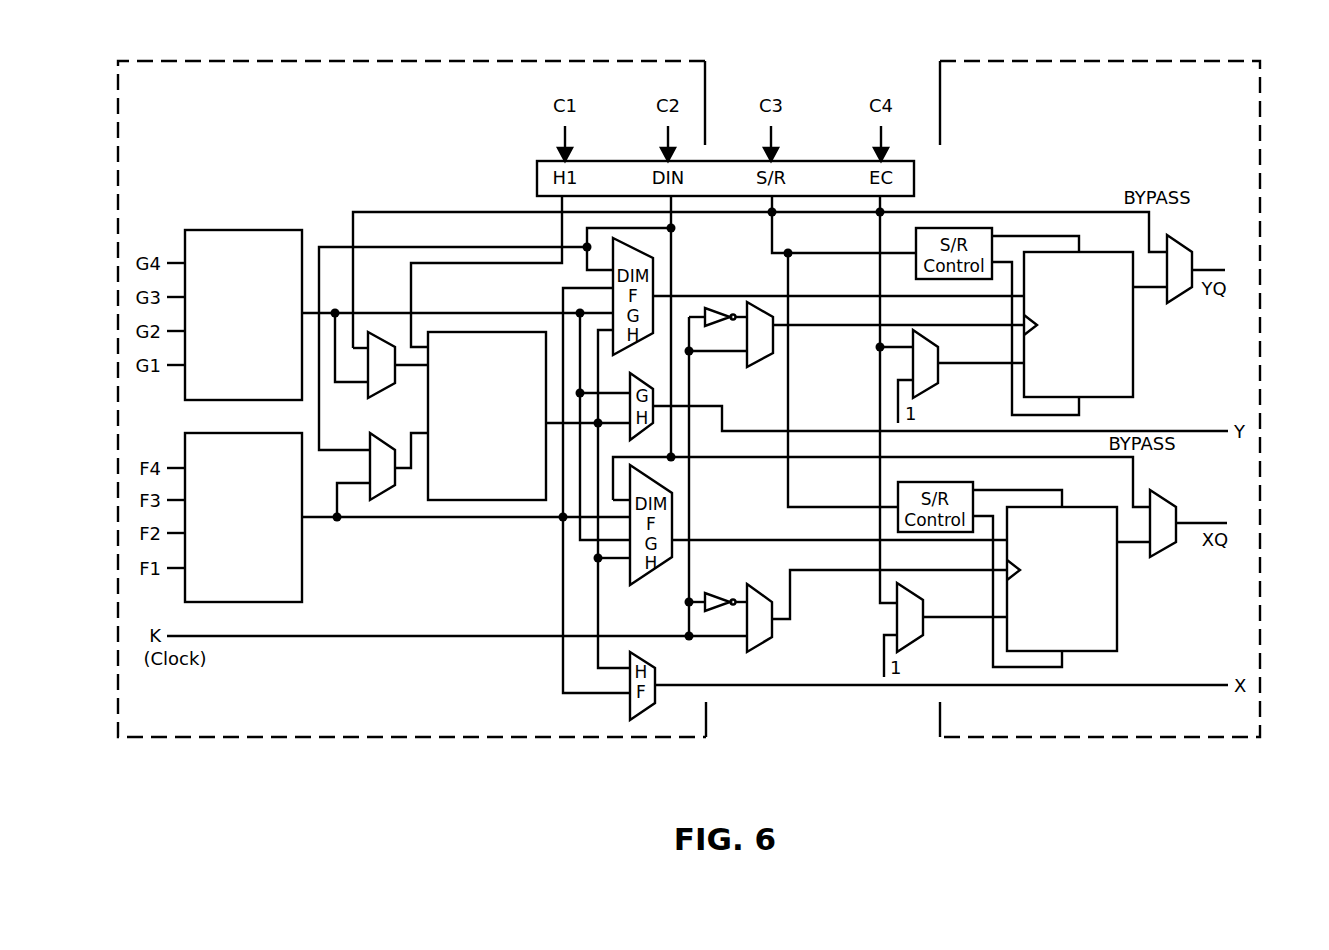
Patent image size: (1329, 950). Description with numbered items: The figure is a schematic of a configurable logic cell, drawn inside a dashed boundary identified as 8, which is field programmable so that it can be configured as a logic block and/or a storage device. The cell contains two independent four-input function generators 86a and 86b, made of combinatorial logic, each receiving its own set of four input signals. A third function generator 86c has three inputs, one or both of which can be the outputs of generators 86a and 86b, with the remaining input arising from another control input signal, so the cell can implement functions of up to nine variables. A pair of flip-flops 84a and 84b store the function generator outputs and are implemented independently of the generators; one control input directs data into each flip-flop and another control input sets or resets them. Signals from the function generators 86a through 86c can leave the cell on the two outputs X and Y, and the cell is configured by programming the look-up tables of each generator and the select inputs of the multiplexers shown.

The configurable logic block 8 is at (1284, 86).
The four-input function generator 86a is at (229, 357).
The four-input function generator 86b is at (229, 560).
The third function generator 86c is at (473, 450).
The flip-flop 84a is at (1133, 325).
The flip-flop 84b is at (1117, 580).